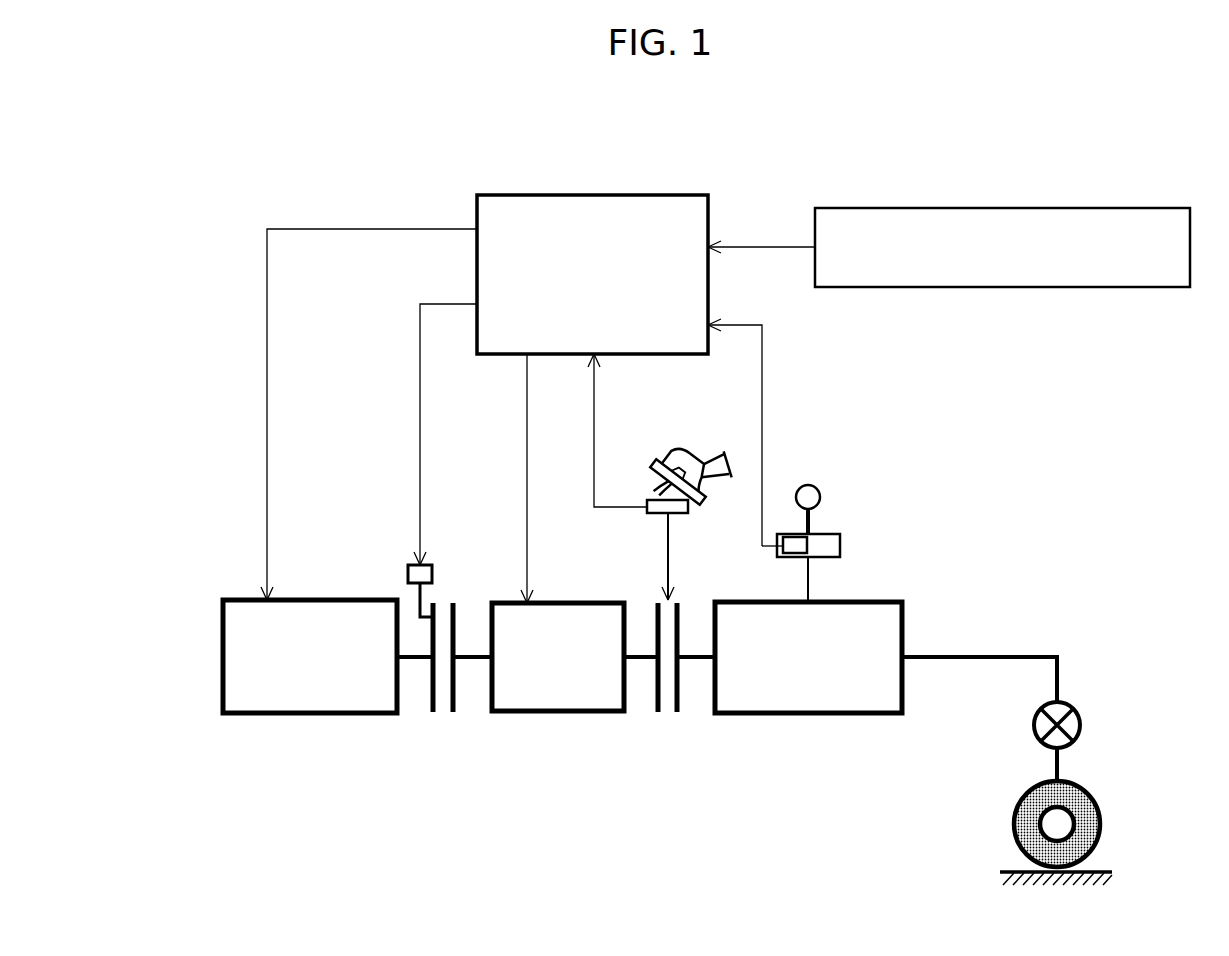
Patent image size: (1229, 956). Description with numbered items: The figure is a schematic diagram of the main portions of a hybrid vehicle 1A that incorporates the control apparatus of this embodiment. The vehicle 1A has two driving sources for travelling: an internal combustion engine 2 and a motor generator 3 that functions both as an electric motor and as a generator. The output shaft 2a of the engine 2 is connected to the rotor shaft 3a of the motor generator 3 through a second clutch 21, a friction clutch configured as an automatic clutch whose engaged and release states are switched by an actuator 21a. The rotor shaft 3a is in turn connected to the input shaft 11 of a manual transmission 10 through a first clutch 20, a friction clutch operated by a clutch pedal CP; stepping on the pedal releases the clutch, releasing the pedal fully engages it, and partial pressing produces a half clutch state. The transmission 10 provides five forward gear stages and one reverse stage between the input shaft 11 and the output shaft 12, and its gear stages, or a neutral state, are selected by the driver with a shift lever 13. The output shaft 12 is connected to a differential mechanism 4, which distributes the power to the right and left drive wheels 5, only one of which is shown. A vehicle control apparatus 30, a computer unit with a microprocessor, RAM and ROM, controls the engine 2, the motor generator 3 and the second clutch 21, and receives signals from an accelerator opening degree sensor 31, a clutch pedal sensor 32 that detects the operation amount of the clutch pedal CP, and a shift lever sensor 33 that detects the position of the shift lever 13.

The vehicle 1A is at (207, 231).
The internal combustion engine 2 is at (263, 714).
The output shaft 2a is at (415, 660).
The motor generator 3 is at (555, 712).
The rotor shaft 3a is at (470, 660).
The differential mechanism 4 is at (1035, 740).
The drive wheel 5 is at (1012, 829).
The manual transmission 10 is at (805, 714).
The input shaft 11 is at (697, 660).
The output shaft 12 is at (950, 660).
The shift lever 13 is at (813, 515).
The first clutch 20 is at (667, 722).
The second clutch 21 is at (441, 720).
The actuator 21a is at (408, 572).
The vehicle control apparatus 30 is at (594, 195).
The accelerator opening degree sensor 31 is at (1083, 288).
The clutch pedal sensor 32 is at (683, 510).
The shift lever sensor 33 is at (790, 537).
The clutch pedal CP is at (655, 470).